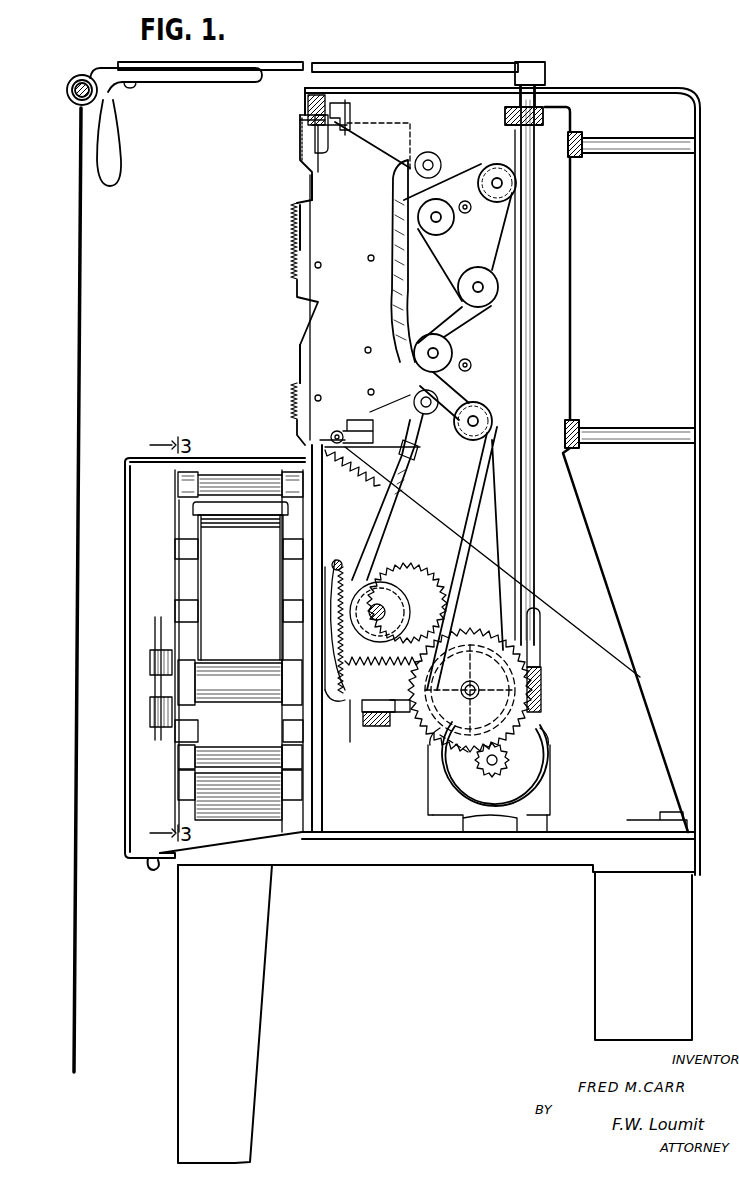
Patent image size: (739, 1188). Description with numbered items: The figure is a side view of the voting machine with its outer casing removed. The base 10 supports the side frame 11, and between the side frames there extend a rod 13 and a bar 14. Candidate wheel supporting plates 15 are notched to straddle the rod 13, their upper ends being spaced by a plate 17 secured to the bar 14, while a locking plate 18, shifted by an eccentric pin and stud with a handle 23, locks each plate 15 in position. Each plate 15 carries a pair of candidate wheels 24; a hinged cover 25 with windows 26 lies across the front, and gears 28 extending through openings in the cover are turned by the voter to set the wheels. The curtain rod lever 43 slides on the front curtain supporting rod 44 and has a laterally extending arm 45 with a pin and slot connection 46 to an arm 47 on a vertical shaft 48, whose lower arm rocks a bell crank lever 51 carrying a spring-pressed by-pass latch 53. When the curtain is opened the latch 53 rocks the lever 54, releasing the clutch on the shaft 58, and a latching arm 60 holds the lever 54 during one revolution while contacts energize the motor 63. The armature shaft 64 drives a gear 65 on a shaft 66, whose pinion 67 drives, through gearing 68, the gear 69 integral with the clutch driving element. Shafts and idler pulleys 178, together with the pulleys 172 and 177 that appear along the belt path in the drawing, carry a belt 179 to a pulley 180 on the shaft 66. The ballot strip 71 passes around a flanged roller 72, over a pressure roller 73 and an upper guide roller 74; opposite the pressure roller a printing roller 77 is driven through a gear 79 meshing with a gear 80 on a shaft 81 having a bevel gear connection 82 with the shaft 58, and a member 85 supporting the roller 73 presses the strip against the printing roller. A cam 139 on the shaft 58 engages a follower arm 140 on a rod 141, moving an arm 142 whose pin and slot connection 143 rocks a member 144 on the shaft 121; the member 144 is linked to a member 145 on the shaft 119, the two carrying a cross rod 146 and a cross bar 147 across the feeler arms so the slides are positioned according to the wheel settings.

The base 10 is at (470, 850).
The side frame 11 is at (558, 465).
The rod 13 is at (330, 437).
The bar 14 is at (310, 108).
The candidate wheel supporting plate 15 is at (330, 290).
The plate 17 is at (300, 122).
The locking plate 18 is at (352, 112).
The handle 23 is at (322, 142).
The candidate wheel 24 is at (298, 207).
The hinged cover 25 is at (300, 158).
The window 26 is at (300, 182).
The gear 28 is at (291, 262).
The curtain rod lever 43 is at (112, 158).
The front curtain supporting rod 44 is at (78, 93).
The laterally extending arm 45 is at (189, 78).
The pin and slot connection 46 is at (133, 88).
The arm 47 is at (453, 70).
The vertical shaft 48 is at (535, 322).
The bell crank lever 51 is at (373, 728).
The by-pass latch 53 is at (402, 714).
The lever 54 is at (415, 618).
The shaft 58 is at (383, 607).
The latching arm 60 is at (458, 642).
The motor 63 is at (535, 770).
The armature shaft 64 is at (505, 760).
The gear 65 is at (522, 716).
The shaft 66 is at (471, 687).
The pinion 67 is at (455, 753).
The gearing 68 is at (432, 628).
The gear 69 is at (385, 567).
The strip 71 is at (232, 587).
The flanged roller 72 is at (180, 808).
The pressure roller 73 is at (240, 682).
The upper guide roller 74 is at (190, 525).
The printing roller 77 is at (175, 634).
The gear 79 is at (335, 695).
The gear 80 is at (325, 590).
The shaft 81 is at (382, 661).
The bevel gear connection 82 is at (366, 729).
The member 85 is at (285, 720).
The shaft 119 is at (430, 158).
The shaft 121 is at (430, 400).
The cam 139 is at (421, 597).
The follower arm 140 is at (352, 470).
The rod 141 is at (335, 558).
The arm 142 is at (410, 470).
The pin and slot connection 143 is at (420, 452).
The member 144 is at (395, 320).
The member 145 is at (445, 185).
The cross rod 146 is at (466, 360).
The cross bar 147 is at (466, 213).
The pulley 172 is at (431, 217).
The pulley 177 is at (430, 335).
The idler pulley 178 is at (530, 247).
The belt 179 is at (515, 520).
The pulley 180 is at (520, 650).